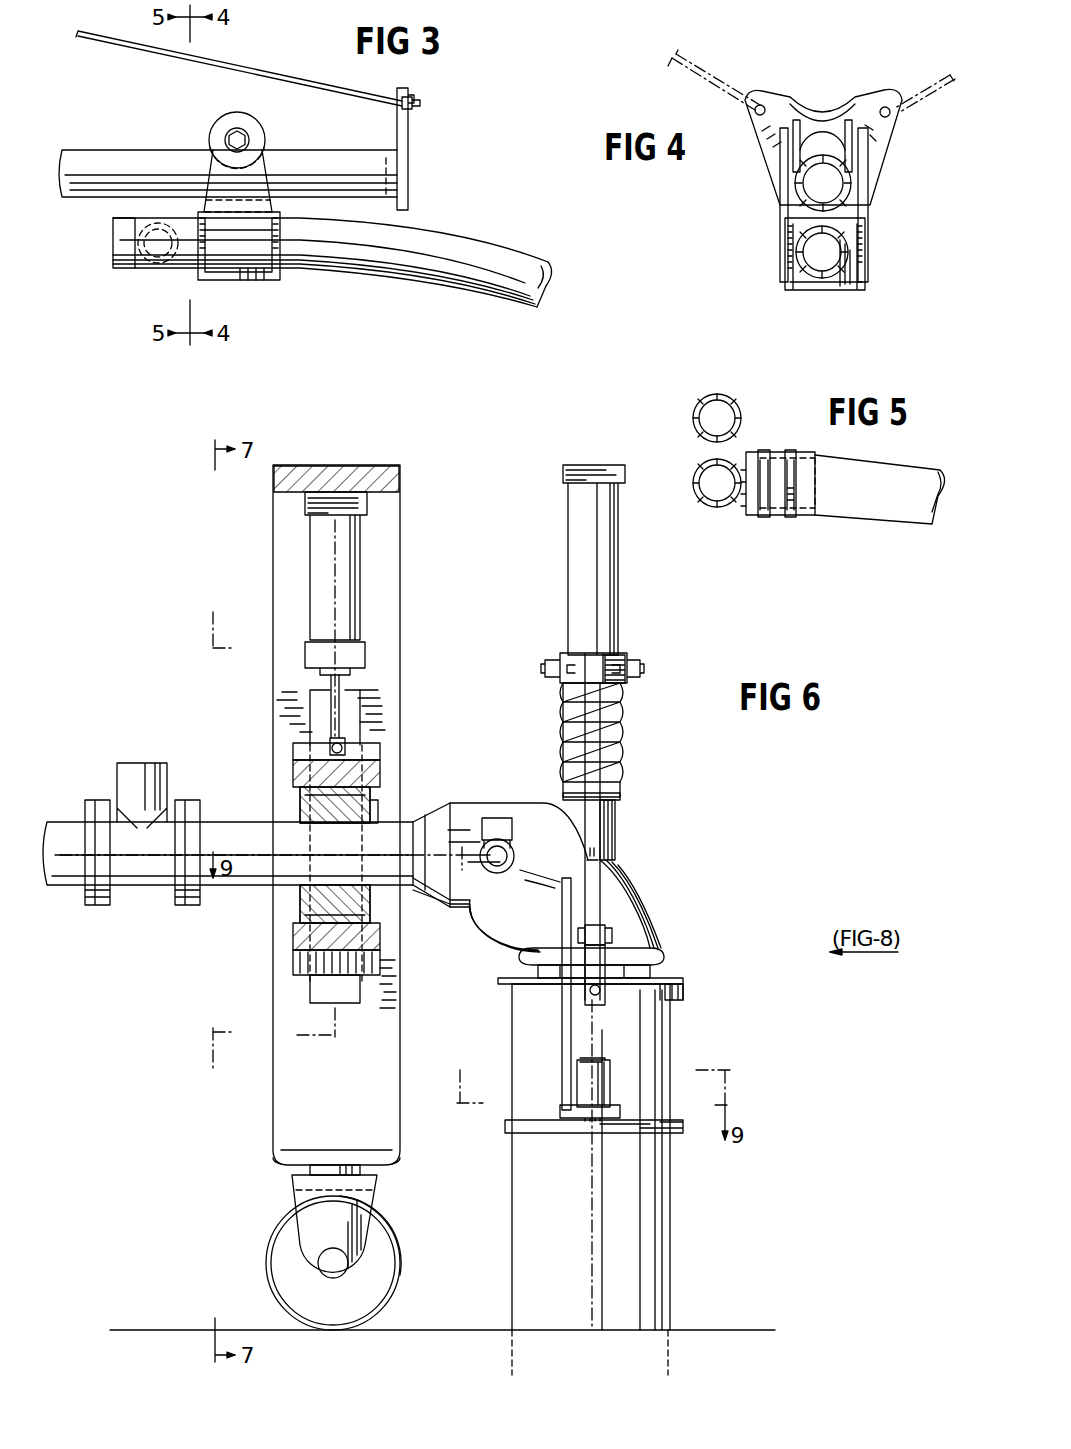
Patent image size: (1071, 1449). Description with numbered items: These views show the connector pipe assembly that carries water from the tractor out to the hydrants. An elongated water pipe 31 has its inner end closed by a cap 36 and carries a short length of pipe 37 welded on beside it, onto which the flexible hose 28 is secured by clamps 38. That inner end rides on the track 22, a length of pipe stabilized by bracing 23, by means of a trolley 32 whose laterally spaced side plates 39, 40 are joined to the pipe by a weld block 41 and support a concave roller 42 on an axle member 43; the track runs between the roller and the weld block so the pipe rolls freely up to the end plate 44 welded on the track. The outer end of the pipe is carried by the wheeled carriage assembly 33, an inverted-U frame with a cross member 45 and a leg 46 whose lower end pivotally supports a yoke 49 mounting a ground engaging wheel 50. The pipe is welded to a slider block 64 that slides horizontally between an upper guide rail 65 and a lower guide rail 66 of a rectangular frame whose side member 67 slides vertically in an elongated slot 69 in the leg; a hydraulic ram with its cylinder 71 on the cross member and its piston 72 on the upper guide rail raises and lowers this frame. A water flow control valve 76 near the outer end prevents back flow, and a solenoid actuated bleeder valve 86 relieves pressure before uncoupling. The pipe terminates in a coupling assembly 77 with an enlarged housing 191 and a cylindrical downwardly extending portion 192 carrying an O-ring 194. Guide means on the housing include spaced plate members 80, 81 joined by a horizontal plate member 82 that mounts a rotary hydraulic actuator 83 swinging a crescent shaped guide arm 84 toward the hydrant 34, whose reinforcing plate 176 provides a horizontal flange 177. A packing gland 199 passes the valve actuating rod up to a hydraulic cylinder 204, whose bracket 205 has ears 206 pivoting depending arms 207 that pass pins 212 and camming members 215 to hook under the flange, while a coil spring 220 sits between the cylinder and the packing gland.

In FIG. 3, the track 22 is at (144, 158).
In FIG. 4, the track 22 is at (806, 185).
In FIG. 5, the track 22 is at (742, 399).
In FIG. 3, the bracing 23 is at (250, 72).
In FIG. 4, the bracing 23 is at (811, 81).
In FIG. 5, the flexible hose 28 is at (888, 519).
In FIG. 3, the water pipe 31 is at (462, 298).
In FIG. 4, the water pipe 31 is at (822, 252).
In FIG. 5, the water pipe 31 is at (709, 510).
In FIG. 6, the water pipe 31 is at (68, 817).
In FIG. 3, the trolley 32 is at (275, 165).
In FIG. 4, the trolley 32 is at (879, 236).
In FIG. 6, the wheeled carriage assembly 33 is at (364, 820).
In FIG. 6, the hydrant 34 is at (668, 1073).
In FIG. 3, the cap 36 is at (112, 243).
In FIG. 5, the short length of pipe 37 is at (746, 454).
In FIG. 5, the clamps 38 is at (786, 452).
In FIG. 3, the side plate 39 is at (241, 262).
In FIG. 4, the side plate 39 is at (866, 185).
In FIG. 4, the side plate 40 is at (779, 160).
In FIG. 3, the weld block 41 is at (277, 271).
In FIG. 3, the concave roller 42 is at (252, 124).
In FIG. 3, the axle member 43 is at (237, 131).
In FIG. 3, the end plate 44 is at (409, 139).
In FIG. 4, the end plate 44 is at (828, 110).
In FIG. 6, the cross member 45 is at (372, 472).
In FIG. 6, the leg 46 is at (392, 565).
In FIG. 6, the yoke 49 is at (364, 1210).
In FIG. 6, the ground engaging wheel 50 is at (386, 1264).
In FIG. 6, the slider block 64 is at (378, 808).
In FIG. 6, the upper guide rail 65 is at (394, 762).
In FIG. 6, the lower guide rail 66 is at (364, 934).
In FIG. 6, the side member 67 is at (368, 970).
In FIG. 6, the slot 69 is at (358, 706).
In FIG. 6, the cylinder 71 is at (318, 544).
In FIG. 6, the piston 72 is at (327, 706).
In FIG. 6, the water flow control valve 76 is at (150, 794).
In FIG. 6, the coupling assembly 77 is at (644, 899).
In FIG. 6, the plate member 80 is at (614, 1028).
In FIG. 6, the plate member 81 is at (562, 1012).
In FIG. 6, the horizontal plate member 82 is at (581, 1117).
In FIG. 6, the rotary hydraulic actuator 83 is at (608, 1092).
In FIG. 6, the guide arm 84 is at (682, 1130).
In FIG. 6, the bleeder valve 86 is at (496, 874).
In FIG. 6, the reinforcing plate 176 is at (661, 980).
In FIG. 6, the horizontal flange 177 is at (679, 986).
In FIG. 6, the enlarged housing 191 is at (494, 810).
In FIG. 6, the cylindrical downwardly extending portion 192 is at (540, 972).
In FIG. 6, the O-ring 194 is at (522, 955).
In FIG. 6, the packing gland 199 is at (592, 844).
In FIG. 6, the hydraulic cylinder 204 is at (612, 560).
In FIG. 6, the bracket 205 is at (622, 662).
In FIG. 6, the ears 206 is at (577, 654).
In FIG. 6, the depending arms 207 is at (579, 722).
In FIG. 6, the pins 212 is at (594, 932).
In FIG. 6, the camming members 215 is at (589, 974).
In FIG. 6, the coil spring 220 is at (590, 738).